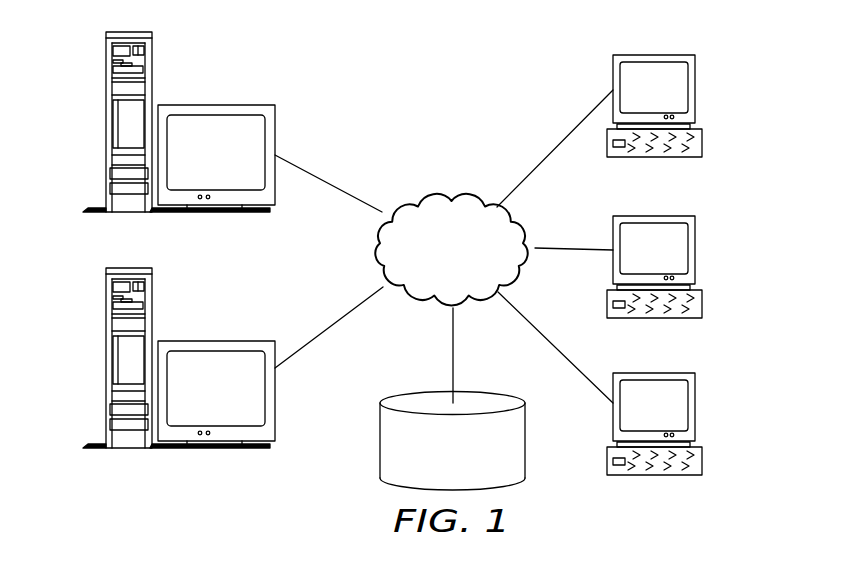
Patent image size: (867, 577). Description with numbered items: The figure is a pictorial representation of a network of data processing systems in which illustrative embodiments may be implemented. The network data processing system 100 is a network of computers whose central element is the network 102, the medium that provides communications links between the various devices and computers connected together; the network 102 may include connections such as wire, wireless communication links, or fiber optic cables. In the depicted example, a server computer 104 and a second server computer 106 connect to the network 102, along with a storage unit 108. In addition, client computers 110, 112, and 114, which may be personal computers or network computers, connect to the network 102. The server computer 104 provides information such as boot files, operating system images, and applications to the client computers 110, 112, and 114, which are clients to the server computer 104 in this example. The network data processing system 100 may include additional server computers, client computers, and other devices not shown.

The network data processing system 100 is at (514, 72).
The network 102 is at (420, 192).
The server computer 104 is at (103, 120).
The server computer 106 is at (103, 358).
The storage unit 108 is at (380, 450).
The client computer 110 is at (697, 88).
The client computer 112 is at (697, 250).
The client computer 114 is at (697, 407).